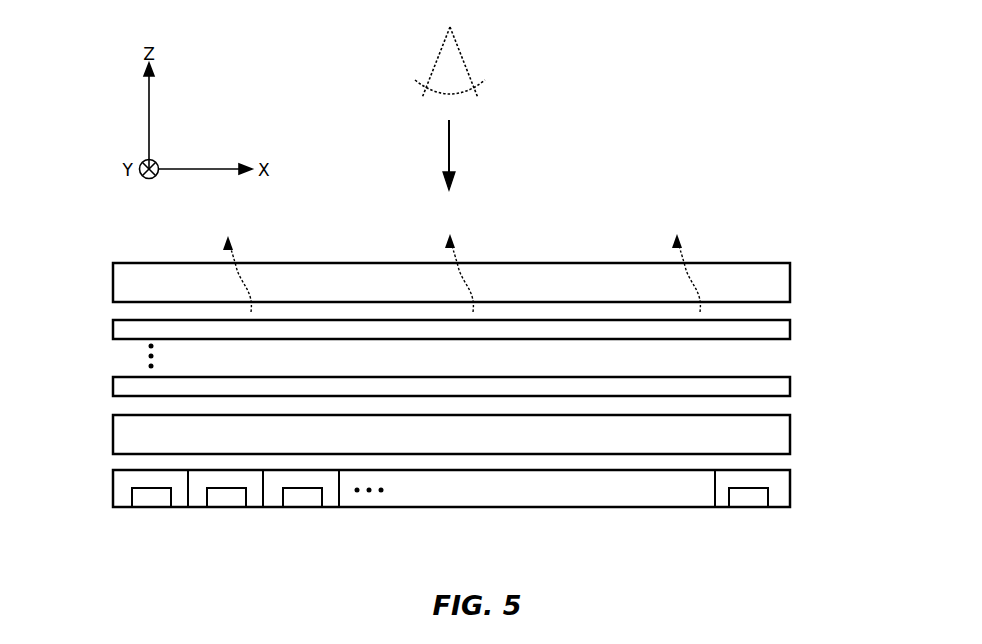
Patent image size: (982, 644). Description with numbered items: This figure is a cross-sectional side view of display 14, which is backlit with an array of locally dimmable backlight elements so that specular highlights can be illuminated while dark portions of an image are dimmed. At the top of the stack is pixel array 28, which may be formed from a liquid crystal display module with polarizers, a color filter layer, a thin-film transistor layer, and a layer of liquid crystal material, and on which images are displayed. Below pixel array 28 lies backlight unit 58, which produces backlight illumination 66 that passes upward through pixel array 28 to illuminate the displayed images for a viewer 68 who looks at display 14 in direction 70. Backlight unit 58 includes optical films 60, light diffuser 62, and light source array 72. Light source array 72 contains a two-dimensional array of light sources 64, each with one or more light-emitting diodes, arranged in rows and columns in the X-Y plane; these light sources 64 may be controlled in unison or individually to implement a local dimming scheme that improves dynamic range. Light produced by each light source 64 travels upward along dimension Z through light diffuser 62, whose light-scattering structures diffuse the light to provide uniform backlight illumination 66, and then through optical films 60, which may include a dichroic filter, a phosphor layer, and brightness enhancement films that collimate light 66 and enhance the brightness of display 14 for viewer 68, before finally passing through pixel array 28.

The display 14 is at (690, 162).
The pixel array 28 is at (790, 284).
The backlight unit 58 is at (83, 307).
The optical films 60 is at (807, 320).
The light diffuser 62 is at (792, 437).
The light sources 64 is at (150, 500).
The backlight illumination 66 is at (247, 278).
The viewer 68 is at (462, 56).
The direction 70 is at (450, 156).
The light source array 72 is at (814, 492).